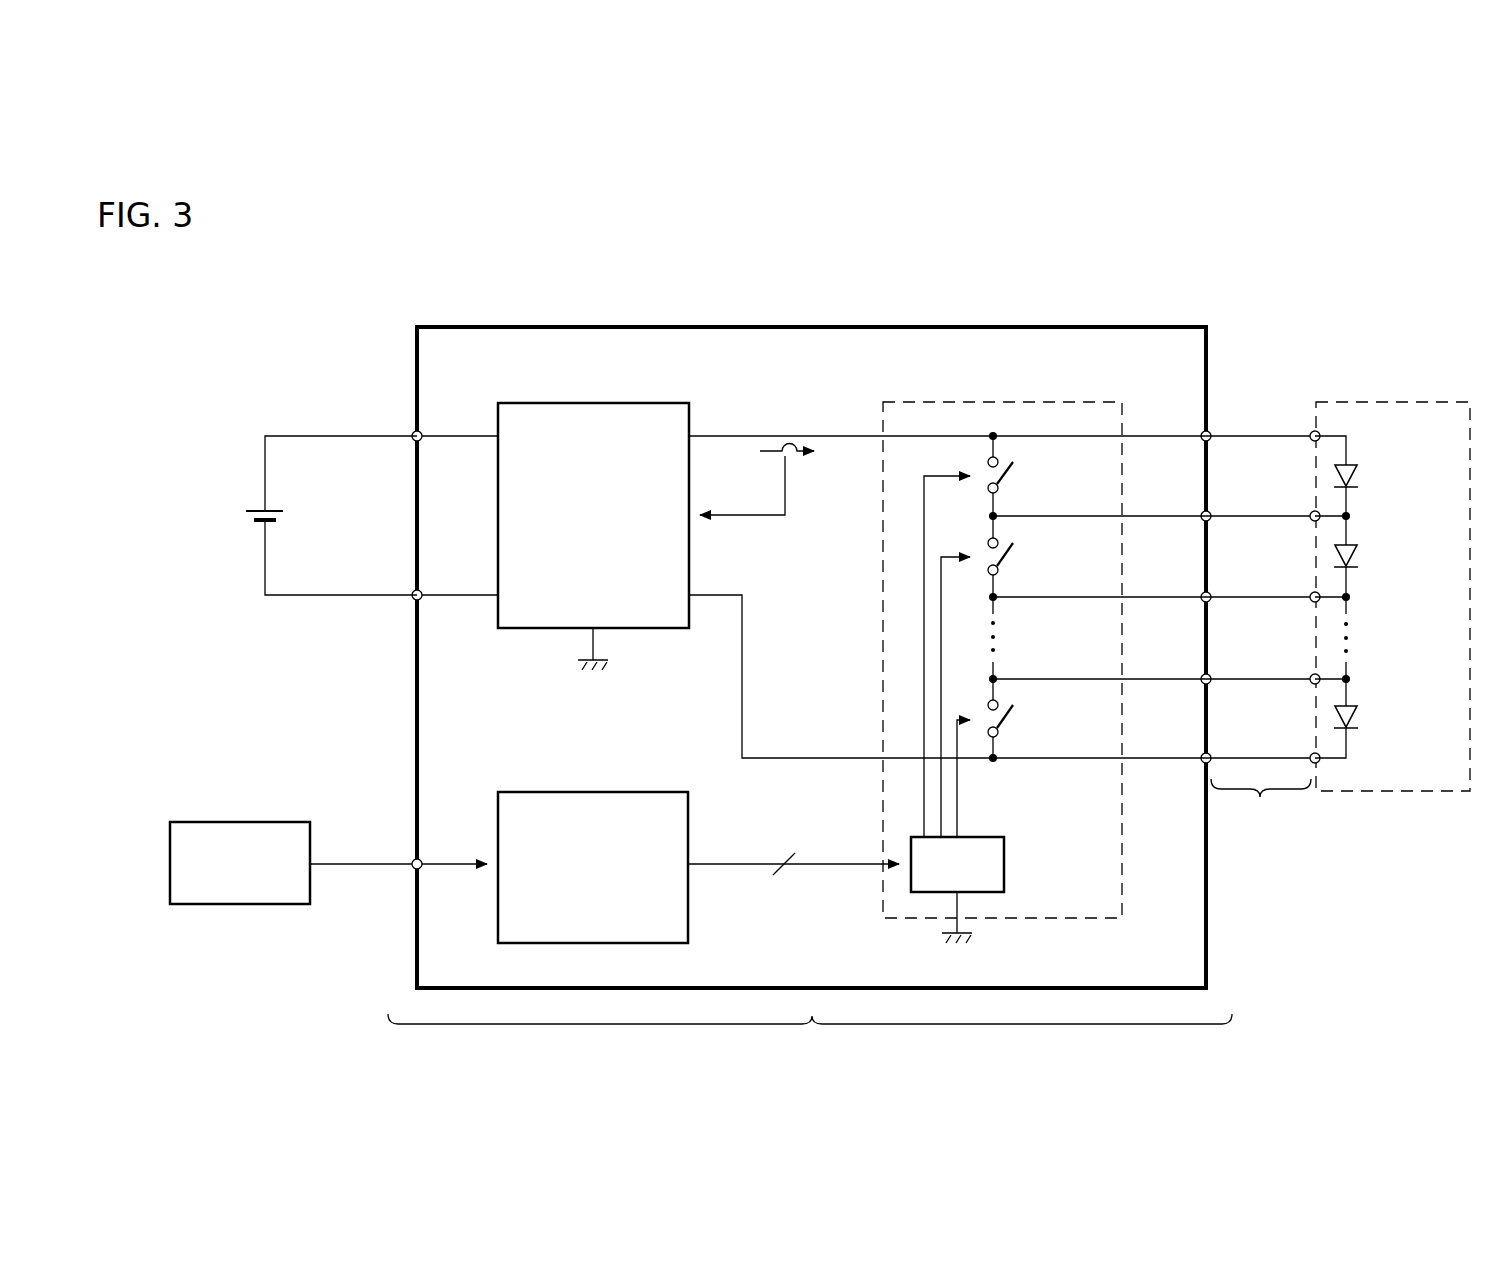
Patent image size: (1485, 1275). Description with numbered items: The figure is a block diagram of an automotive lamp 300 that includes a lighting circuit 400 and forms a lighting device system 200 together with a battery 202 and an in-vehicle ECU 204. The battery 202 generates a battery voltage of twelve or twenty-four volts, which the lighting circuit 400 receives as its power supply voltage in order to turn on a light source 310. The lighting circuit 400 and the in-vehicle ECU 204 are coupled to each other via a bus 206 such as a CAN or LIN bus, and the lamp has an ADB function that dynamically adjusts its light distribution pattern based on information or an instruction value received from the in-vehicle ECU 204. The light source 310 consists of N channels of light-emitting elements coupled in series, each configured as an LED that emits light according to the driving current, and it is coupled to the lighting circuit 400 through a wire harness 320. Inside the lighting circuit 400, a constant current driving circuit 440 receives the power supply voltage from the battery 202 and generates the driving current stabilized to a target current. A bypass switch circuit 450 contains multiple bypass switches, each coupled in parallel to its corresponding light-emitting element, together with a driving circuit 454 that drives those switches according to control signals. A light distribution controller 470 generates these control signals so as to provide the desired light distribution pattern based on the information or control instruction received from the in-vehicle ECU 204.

The lighting device system 200 is at (1467, 262).
The battery 202 is at (241, 515).
The in-vehicle ECU 204 is at (238, 906).
The bus 206 is at (350, 866).
The automotive lamp 300 is at (810, 1038).
The light source 310 is at (1390, 402).
The wire harness 320 is at (1260, 634).
The lighting circuit 400 is at (1083, 328).
The constant current driving circuit 440 is at (622, 403).
The bypass switch circuit 450 is at (1012, 402).
The driving circuit 454 is at (982, 835).
The light distribution controller 470 is at (622, 792).